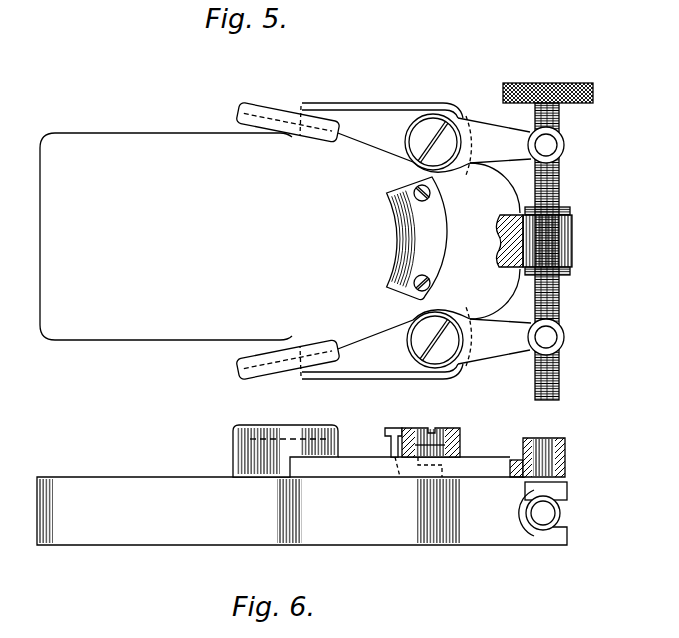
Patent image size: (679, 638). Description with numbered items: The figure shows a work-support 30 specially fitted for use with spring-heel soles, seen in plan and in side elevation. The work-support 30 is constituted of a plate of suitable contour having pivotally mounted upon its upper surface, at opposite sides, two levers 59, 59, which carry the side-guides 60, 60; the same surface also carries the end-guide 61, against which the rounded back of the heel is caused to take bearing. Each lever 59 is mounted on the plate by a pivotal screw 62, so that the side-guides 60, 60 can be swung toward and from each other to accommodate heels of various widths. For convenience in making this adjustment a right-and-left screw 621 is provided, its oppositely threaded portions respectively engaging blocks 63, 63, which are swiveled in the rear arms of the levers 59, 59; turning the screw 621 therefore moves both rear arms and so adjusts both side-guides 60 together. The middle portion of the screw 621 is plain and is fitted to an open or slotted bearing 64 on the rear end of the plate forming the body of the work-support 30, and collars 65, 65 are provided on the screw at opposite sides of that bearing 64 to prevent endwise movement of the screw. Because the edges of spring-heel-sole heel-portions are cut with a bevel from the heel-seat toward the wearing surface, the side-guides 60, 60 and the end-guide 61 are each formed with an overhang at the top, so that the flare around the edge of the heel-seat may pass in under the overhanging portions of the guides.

In FIG. 5, the work-support 30 is at (156, 342).
In FIG. 6, the work-support 30 is at (130, 548).
In FIG. 5, the lever 59 is at (392, 118).
In FIG. 6, the lever 59 is at (378, 470).
In FIG. 5, the side-guide 60 is at (264, 103).
In FIG. 6, the side-guide 60 is at (233, 447).
In FIG. 5, the end-guide 61 is at (402, 238).
In FIG. 6, the end-guide 61 is at (393, 427).
In FIG. 5, the pivotal screw 62 is at (453, 130).
In FIG. 6, the pivotal screw 62 is at (455, 429).
In FIG. 5, the right-and-left screw 621 is at (562, 84).
In FIG. 6, the right-and-left screw 621 is at (545, 522).
In FIG. 5, the block 63 is at (555, 143).
In FIG. 6, the block 63 is at (553, 491).
In FIG. 5, the open or slotted bearing 64 is at (572, 244).
In FIG. 5, the collar 65 is at (566, 212).